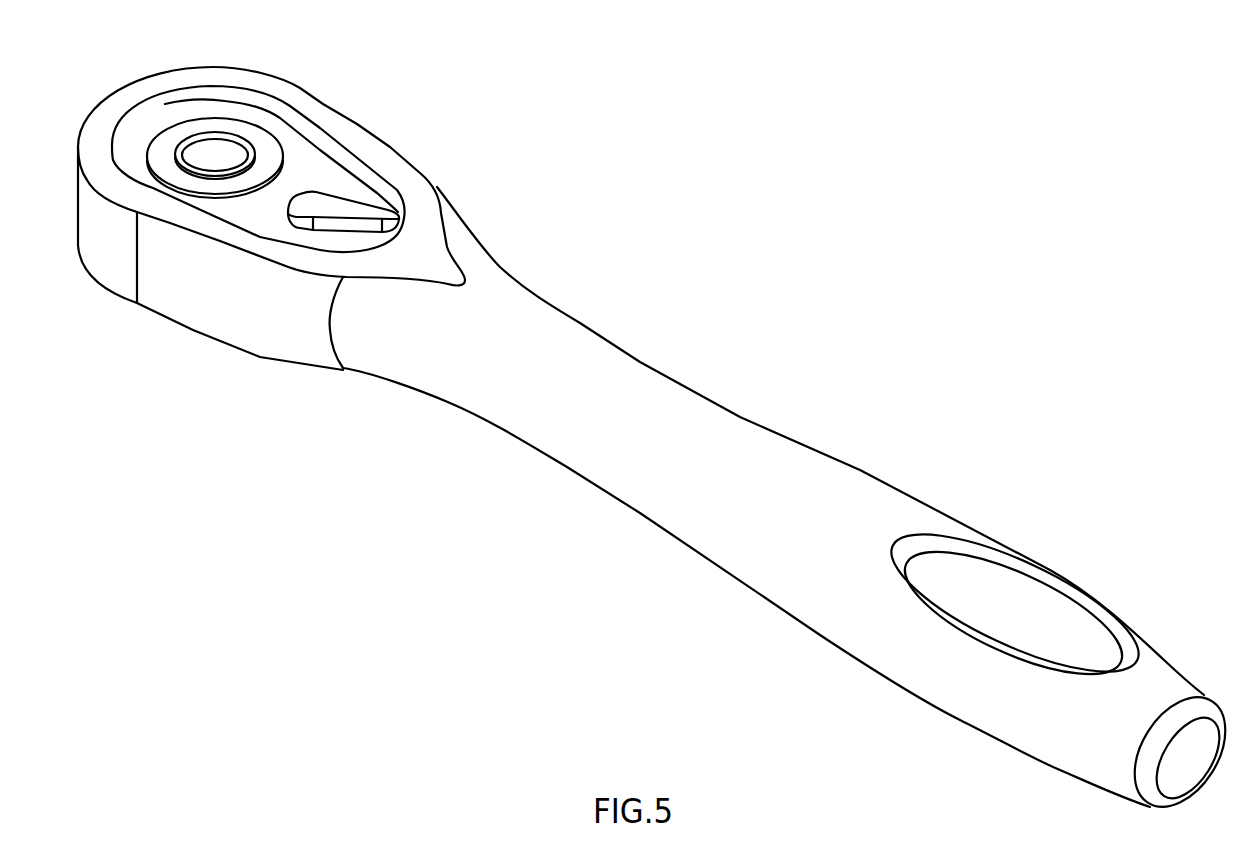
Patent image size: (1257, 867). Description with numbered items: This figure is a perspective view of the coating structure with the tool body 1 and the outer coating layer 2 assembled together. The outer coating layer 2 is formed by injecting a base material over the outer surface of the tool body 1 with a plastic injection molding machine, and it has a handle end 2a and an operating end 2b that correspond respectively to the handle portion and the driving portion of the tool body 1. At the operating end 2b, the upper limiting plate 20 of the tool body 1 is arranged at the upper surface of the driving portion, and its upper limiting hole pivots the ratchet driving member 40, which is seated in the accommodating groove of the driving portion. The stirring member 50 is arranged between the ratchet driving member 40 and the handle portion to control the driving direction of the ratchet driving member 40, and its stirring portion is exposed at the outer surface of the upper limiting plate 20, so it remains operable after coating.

The tool body 1 is at (276, 197).
The upper limiting plate 20 is at (307, 158).
The ratchet driving member 40 is at (253, 136).
The stirring member 50 is at (377, 169).
The outer coating layer 2 is at (787, 477).
The handle end 2a is at (1031, 570).
The operating end 2b is at (423, 204).